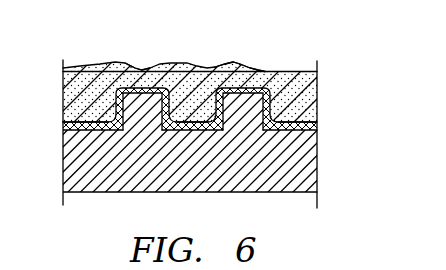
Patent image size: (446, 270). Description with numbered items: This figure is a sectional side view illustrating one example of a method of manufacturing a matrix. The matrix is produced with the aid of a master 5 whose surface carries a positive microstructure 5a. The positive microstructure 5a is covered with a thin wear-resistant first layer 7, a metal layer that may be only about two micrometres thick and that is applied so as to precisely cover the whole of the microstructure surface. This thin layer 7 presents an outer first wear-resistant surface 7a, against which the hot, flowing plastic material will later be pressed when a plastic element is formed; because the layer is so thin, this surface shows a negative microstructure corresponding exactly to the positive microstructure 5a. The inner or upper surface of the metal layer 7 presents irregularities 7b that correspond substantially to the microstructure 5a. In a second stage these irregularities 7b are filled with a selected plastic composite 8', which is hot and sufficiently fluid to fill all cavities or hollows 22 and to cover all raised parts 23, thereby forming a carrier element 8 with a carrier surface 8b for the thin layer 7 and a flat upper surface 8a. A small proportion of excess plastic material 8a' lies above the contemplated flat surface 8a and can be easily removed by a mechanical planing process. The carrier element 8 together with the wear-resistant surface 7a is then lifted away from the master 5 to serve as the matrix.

The master 5 is at (127, 180).
The positive microstructure 5a is at (180, 131).
The thin wear-resistant first layer 7 is at (157, 71).
The first wear-resistant surface 7a is at (204, 128).
The irregularities 7b is at (190, 113).
The carrier element 8 is at (191, 102).
The flat upper surface 8a is at (164, 47).
The excess plastic material 8a' is at (137, 41).
The carrier surface 8b is at (272, 108).
The plastic composite 8' is at (68, 129).
The cavity or hollow 22 is at (233, 64).
The raised part 23 is at (286, 130).